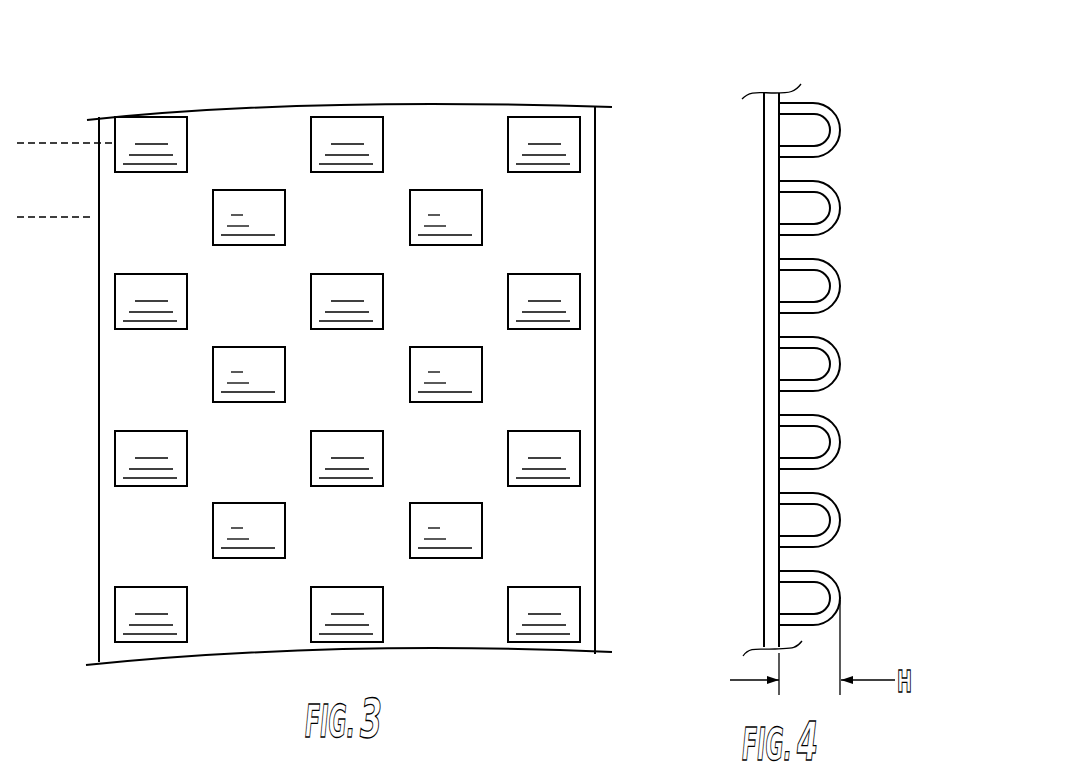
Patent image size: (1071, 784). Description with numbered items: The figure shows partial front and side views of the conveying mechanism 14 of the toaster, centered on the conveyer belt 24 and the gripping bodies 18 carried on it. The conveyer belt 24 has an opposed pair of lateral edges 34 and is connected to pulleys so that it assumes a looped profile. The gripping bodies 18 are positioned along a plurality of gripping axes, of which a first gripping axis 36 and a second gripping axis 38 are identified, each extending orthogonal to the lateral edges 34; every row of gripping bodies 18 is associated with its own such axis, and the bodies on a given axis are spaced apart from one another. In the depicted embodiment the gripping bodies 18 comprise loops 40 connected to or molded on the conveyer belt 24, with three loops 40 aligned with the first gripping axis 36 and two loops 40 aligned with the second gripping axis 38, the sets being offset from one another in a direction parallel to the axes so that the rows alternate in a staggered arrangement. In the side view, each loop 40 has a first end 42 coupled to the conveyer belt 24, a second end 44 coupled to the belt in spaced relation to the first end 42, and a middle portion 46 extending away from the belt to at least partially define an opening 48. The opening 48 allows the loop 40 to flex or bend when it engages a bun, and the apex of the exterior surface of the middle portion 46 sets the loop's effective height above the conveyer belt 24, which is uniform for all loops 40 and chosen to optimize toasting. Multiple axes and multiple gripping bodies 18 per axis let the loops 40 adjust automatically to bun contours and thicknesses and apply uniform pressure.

In FIG. 3, the panel assembly 14 is at (337, 336).
In FIG. 3, the gripping body 18 is at (347, 336).
In FIG. 4, the gripping body 18 is at (856, 333).
In FIG. 3, the loop 40 is at (260, 200).
In FIG. 4, the loop 40 is at (846, 333).
In FIG. 3, the conveyer belt 24 is at (344, 384).
In FIG. 4, the conveyer belt 24 is at (772, 604).
In FIG. 3, the lateral edge 34 is at (99, 405).
In FIG. 3, the first gripping axis 36 is at (62, 140).
In FIG. 3, the second gripping axis 38 is at (45, 218).
In FIG. 4, the first end 42 is at (800, 106).
In FIG. 4, the second end 44 is at (788, 150).
In FIG. 4, the middle portion 46 is at (830, 146).
In FIG. 4, the opening 48 is at (808, 124).